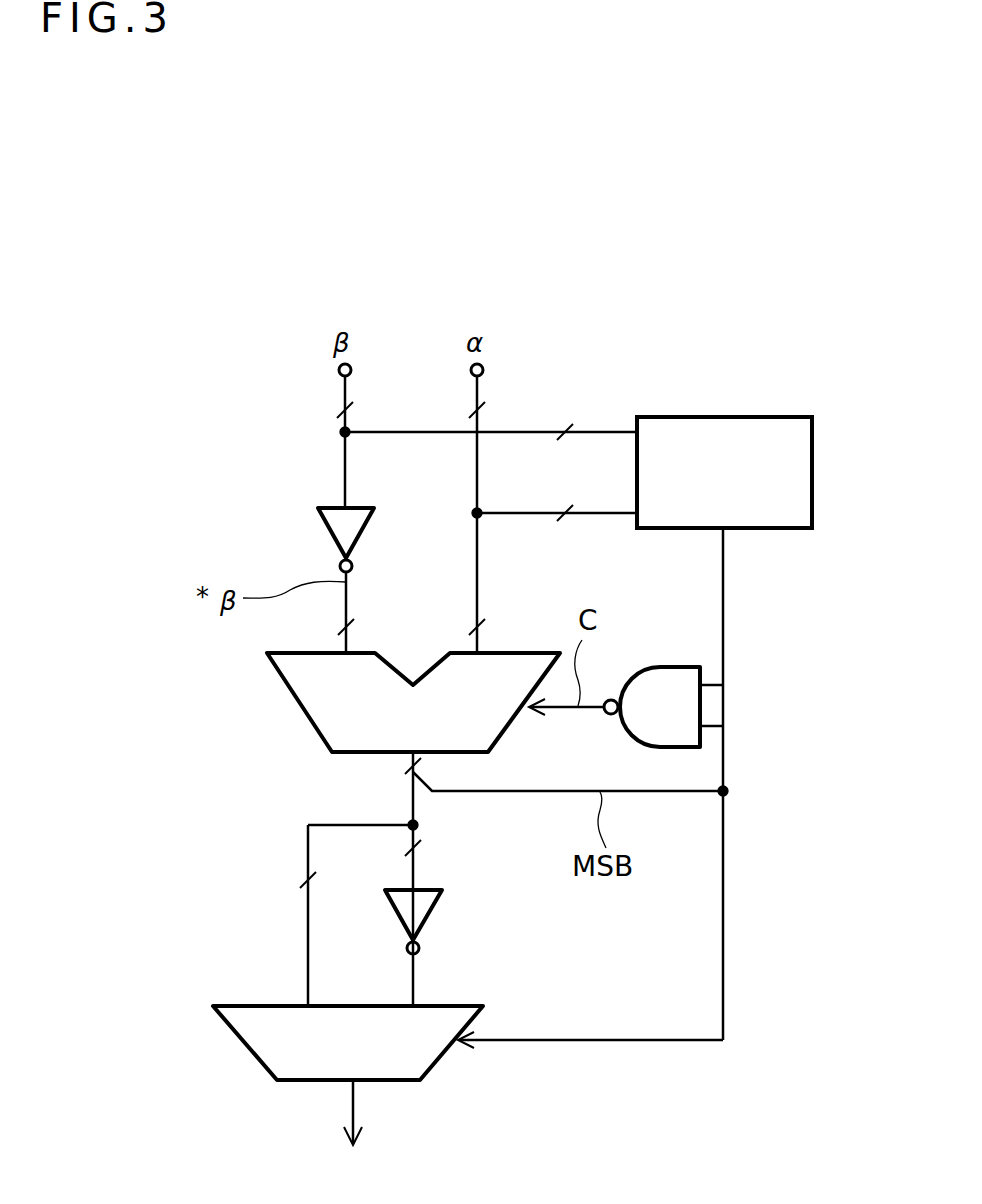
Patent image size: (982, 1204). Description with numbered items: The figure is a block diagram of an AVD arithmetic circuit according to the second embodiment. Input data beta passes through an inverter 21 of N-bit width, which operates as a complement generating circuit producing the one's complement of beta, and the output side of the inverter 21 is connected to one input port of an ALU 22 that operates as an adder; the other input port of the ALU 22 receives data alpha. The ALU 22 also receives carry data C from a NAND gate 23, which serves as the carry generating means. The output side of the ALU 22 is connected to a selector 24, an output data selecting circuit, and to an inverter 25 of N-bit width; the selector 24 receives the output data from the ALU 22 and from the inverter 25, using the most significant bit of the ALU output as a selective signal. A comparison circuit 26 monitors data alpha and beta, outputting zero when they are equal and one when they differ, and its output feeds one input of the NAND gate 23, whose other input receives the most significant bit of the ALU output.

The inverter 21 is at (318, 511).
The ALU 22 is at (302, 710).
The NAND gate 23 is at (648, 667).
The selector 24 is at (234, 1028).
The inverter 25 is at (442, 900).
The comparison circuit 26 is at (812, 475).